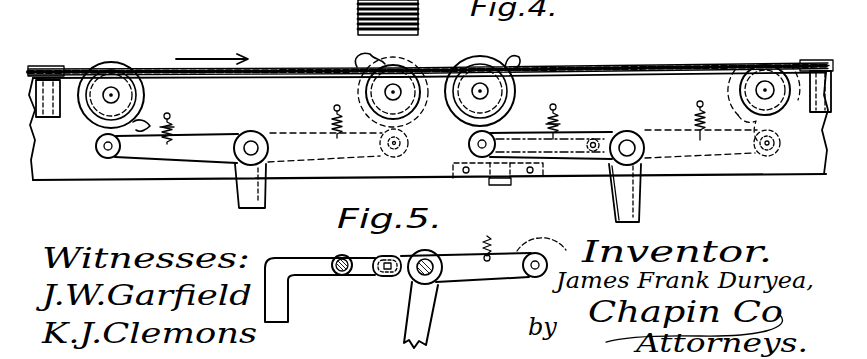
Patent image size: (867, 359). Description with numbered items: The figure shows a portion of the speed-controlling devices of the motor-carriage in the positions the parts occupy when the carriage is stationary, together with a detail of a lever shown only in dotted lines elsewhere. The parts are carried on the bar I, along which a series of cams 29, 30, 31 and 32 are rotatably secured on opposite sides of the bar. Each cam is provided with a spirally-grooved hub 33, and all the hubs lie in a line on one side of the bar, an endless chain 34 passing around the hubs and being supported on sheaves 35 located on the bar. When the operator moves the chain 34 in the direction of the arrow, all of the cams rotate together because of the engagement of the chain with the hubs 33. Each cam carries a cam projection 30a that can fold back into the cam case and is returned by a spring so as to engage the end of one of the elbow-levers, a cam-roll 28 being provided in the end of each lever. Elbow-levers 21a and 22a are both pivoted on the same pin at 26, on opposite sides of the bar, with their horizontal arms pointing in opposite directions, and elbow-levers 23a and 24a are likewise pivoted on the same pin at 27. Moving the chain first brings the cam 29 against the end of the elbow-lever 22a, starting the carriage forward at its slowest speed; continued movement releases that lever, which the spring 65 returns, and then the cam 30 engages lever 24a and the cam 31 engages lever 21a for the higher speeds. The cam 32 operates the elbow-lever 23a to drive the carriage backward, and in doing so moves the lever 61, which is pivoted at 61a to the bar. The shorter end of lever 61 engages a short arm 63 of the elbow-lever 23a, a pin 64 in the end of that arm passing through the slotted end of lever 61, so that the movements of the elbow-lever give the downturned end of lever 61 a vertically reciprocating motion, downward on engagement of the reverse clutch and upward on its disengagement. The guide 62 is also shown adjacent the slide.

In FIG. 4, the bar I is at (254, 92).
In FIG. 4, the elbow-lever 21a is at (236, 204).
In FIG. 4, the elbow-lever 22a is at (216, 152).
In FIG. 4, the elbow-lever 23a is at (611, 200).
In FIG. 5, the elbow-lever 23a is at (470, 277).
In FIG. 4, the elbow-lever 24a is at (629, 199).
In FIG. 4, the pin 26 is at (266, 129).
In FIG. 4, the pin 27 is at (629, 146).
In FIG. 5, the pin 27 is at (431, 263).
In FIG. 4, the cam-roll 28 is at (104, 158).
In FIG. 4, the cam 29 is at (118, 53).
In FIG. 4, the cam 30 is at (473, 67).
In FIG. 4, the cam projection 30a is at (373, 54).
In FIG. 4, the cam 31 is at (367, 73).
In FIG. 4, the cam 32 is at (743, 61).
In FIG. 4, the spirally-grooved hub 33 is at (99, 104).
In FIG. 4, the chain 34 is at (157, 72).
In FIG. 4, the sheave 35 is at (56, 51).
In FIG. 4, the lever 61 is at (499, 185).
In FIG. 5, the lever 61 is at (280, 307).
In FIG. 5, the pivot 61a is at (339, 258).
In FIG. 4, the guide 62 is at (521, 176).
In FIG. 5, the short arm 63 is at (410, 273).
In FIG. 5, the pin 64 is at (384, 275).
In FIG. 4, the spring 65 is at (172, 127).